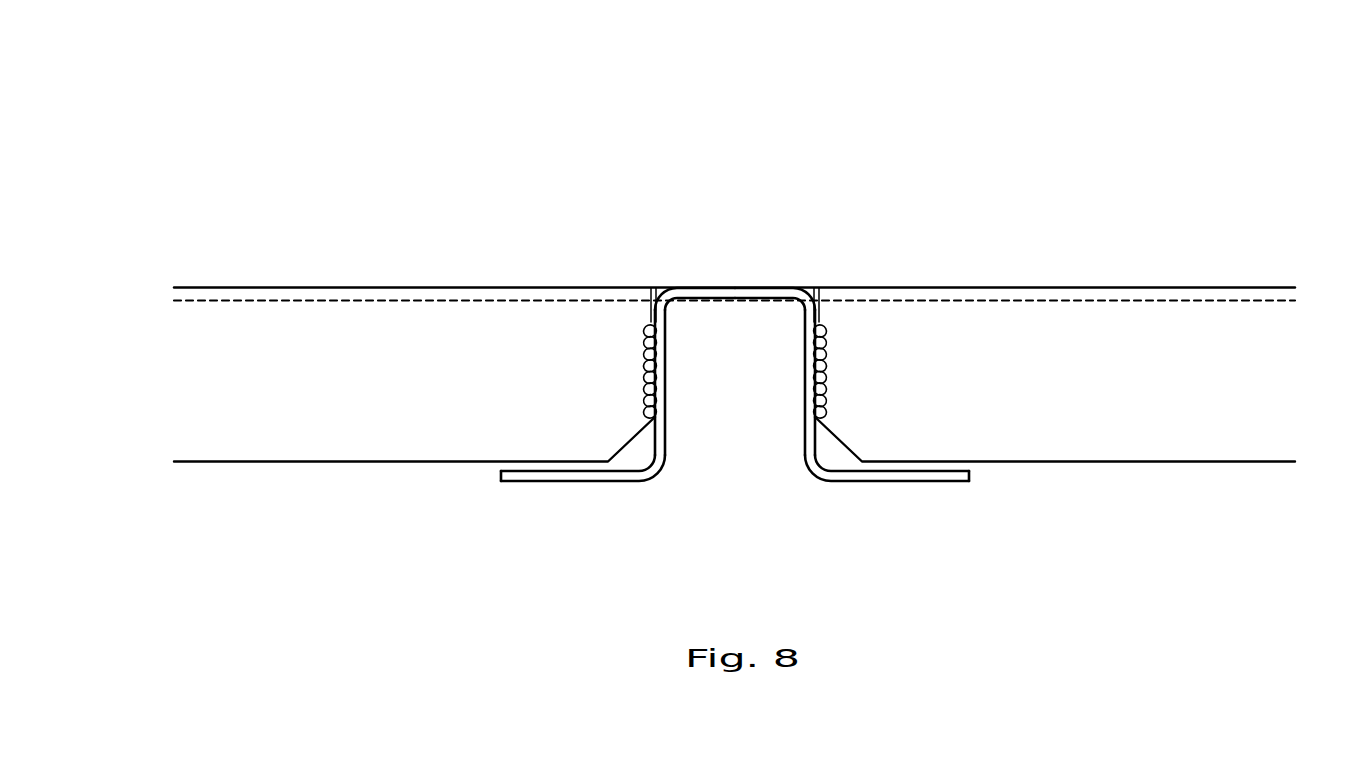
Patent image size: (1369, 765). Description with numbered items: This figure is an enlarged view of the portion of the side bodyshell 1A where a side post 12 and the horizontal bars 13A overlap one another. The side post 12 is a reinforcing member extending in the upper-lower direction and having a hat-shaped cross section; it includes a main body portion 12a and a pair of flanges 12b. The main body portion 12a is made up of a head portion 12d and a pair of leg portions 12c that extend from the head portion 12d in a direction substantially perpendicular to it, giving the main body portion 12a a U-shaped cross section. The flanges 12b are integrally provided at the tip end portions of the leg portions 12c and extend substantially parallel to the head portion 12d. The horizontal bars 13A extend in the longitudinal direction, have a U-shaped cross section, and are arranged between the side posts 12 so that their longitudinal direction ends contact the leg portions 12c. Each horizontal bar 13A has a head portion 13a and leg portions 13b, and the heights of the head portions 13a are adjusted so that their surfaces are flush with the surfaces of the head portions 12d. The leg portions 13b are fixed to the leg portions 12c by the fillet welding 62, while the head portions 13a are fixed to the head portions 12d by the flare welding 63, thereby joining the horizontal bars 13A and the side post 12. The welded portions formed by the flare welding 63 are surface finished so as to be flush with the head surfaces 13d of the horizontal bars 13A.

The side bodyshell 1A is at (1117, 141).
The side post 12 is at (729, 370).
The main body portion 12a is at (733, 296).
The flange 12b is at (511, 478).
The leg portion 12c is at (657, 360).
The head portion 12d is at (780, 293).
The horizontal bar 13A is at (734, 249).
The head portion 13a is at (595, 288).
The head surface 13d is at (498, 288).
The leg portion 13b is at (323, 442).
The fillet welding 62 is at (645, 332).
The flare welding 63 is at (670, 288).